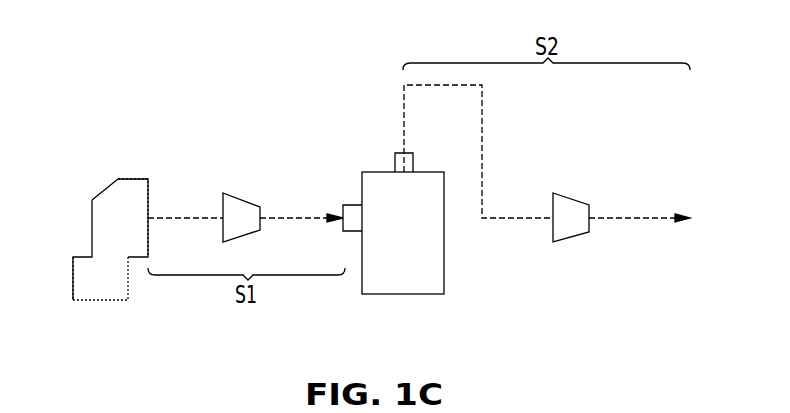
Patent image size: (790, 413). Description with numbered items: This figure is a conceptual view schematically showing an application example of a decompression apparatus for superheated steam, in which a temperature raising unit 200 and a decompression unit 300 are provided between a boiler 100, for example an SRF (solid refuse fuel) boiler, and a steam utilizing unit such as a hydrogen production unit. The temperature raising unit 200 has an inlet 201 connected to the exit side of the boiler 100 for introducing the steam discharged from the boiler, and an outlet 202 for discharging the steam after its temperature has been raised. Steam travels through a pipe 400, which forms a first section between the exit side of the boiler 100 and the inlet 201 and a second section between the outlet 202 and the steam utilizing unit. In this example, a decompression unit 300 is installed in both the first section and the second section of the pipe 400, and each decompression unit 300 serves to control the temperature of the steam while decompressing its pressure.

The boiler 100 is at (108, 192).
The temperature raising unit 200 is at (444, 258).
The inlet 201 is at (343, 205).
The outlet 202 is at (397, 153).
The decompression unit 300 is at (240, 200).
The pipe 400 is at (187, 217).